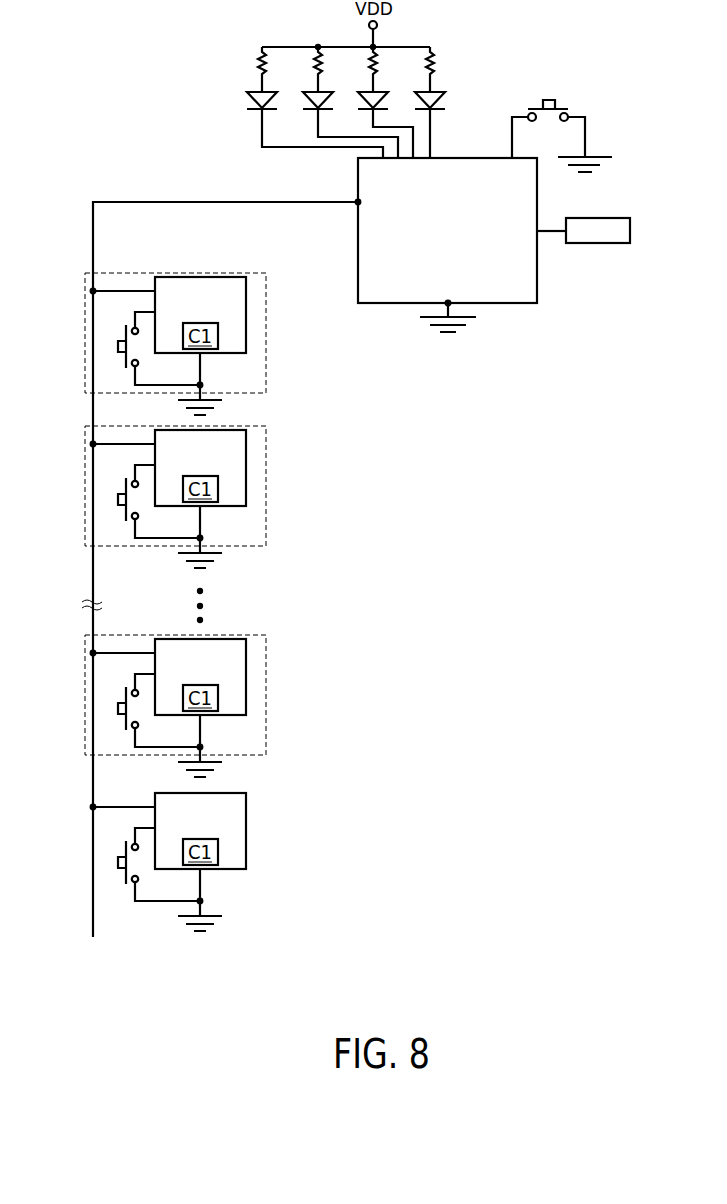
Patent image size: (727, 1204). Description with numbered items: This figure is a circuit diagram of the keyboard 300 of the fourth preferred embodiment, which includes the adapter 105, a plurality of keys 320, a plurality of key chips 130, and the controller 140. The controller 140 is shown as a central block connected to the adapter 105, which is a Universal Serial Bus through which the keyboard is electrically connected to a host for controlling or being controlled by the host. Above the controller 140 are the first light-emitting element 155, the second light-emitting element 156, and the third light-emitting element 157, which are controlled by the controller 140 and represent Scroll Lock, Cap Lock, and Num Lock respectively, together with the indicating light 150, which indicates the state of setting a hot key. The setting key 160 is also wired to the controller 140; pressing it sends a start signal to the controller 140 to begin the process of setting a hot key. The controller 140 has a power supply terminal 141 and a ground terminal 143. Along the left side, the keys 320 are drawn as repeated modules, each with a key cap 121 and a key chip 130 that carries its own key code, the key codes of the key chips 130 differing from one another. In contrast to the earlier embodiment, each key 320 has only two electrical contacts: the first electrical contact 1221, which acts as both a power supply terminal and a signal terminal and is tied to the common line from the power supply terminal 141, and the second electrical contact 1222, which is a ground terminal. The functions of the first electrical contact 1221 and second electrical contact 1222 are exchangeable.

The keyboard 300 is at (150, 30).
The third light-emitting element 157 is at (273, 84).
The second light-emitting element 156 is at (329, 84).
The first light-emitting element 155 is at (384, 84).
The indicating light 150 is at (446, 84).
The setting key 160 is at (622, 108).
The power supply terminal 141 is at (357, 201).
The controller 140 is at (460, 247).
The adapter 105 is at (612, 242).
The ground terminal 143 is at (450, 300).
The first electrical contact 1221 is at (92, 291).
The key cap 121 is at (124, 332).
The key 320 is at (85, 350).
The key chip 130 is at (193, 302).
The second electrical contact 1222 is at (203, 385).